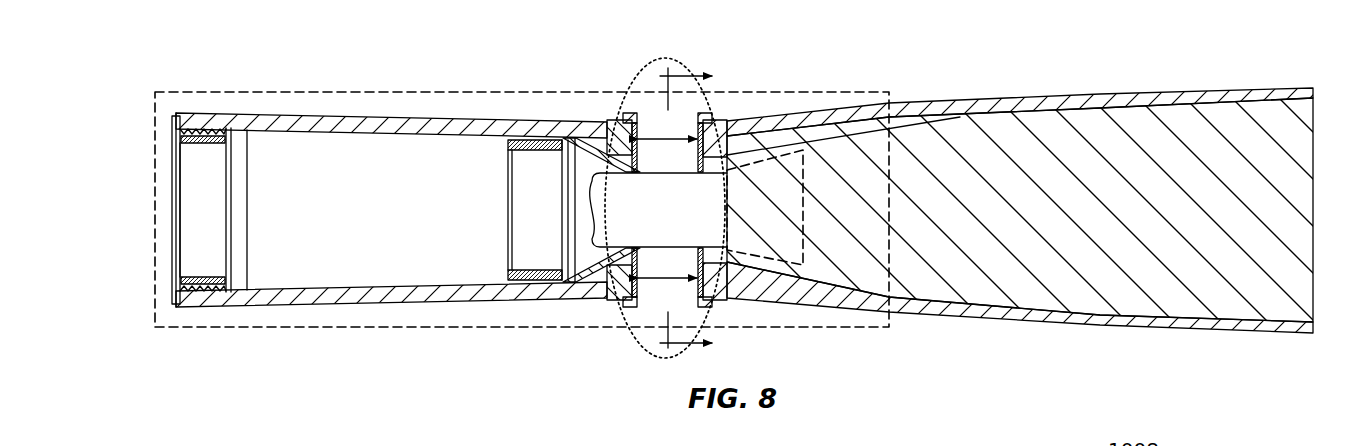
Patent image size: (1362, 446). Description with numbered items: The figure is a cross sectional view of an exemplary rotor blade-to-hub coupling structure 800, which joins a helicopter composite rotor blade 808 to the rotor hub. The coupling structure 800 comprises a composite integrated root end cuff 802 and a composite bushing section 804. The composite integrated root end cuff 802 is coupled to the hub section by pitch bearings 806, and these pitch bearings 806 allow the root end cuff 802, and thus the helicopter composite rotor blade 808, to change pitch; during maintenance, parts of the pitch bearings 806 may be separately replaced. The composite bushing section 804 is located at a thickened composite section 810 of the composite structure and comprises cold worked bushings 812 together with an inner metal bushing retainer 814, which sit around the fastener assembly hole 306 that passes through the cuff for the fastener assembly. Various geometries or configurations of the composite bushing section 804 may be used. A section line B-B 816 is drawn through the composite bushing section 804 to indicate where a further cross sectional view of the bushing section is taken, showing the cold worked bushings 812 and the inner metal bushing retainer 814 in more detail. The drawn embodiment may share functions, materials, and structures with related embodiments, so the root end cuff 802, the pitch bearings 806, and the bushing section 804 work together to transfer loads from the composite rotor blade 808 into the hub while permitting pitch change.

The rotor blade-to-hub coupling structure 800 is at (500, 76).
The composite integrated root end cuff 802 is at (889, 103).
The composite bushing section 804 is at (635, 338).
The pitch bearings 806 is at (203, 288).
The helicopter composite rotor blade 808 is at (1160, 323).
The thickened composite section 810 is at (763, 289).
The cold worked bushings 812 is at (625, 113).
The inner metal bushing retainer 814 is at (727, 155).
The line B-B 816 is at (686, 76).
The fastener assembly hole 306 is at (675, 138).